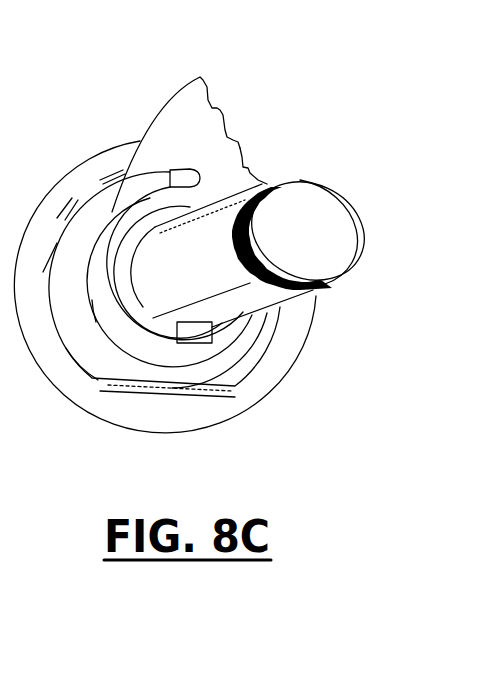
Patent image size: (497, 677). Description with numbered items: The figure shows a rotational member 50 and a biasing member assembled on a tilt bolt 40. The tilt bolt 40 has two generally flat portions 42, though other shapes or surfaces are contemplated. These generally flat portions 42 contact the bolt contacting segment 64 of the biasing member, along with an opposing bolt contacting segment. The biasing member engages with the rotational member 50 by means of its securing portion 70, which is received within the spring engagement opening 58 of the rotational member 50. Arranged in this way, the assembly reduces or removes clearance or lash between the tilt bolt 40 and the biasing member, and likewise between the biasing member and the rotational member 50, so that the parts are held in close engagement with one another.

The tilt bolt 40 is at (309, 208).
The generally flat portions 42 is at (286, 294).
The rotational member 50 is at (185, 97).
The spring engagement opening 58 is at (200, 182).
The bolt contacting segment 64 is at (177, 326).
The securing portion 70 is at (192, 175).